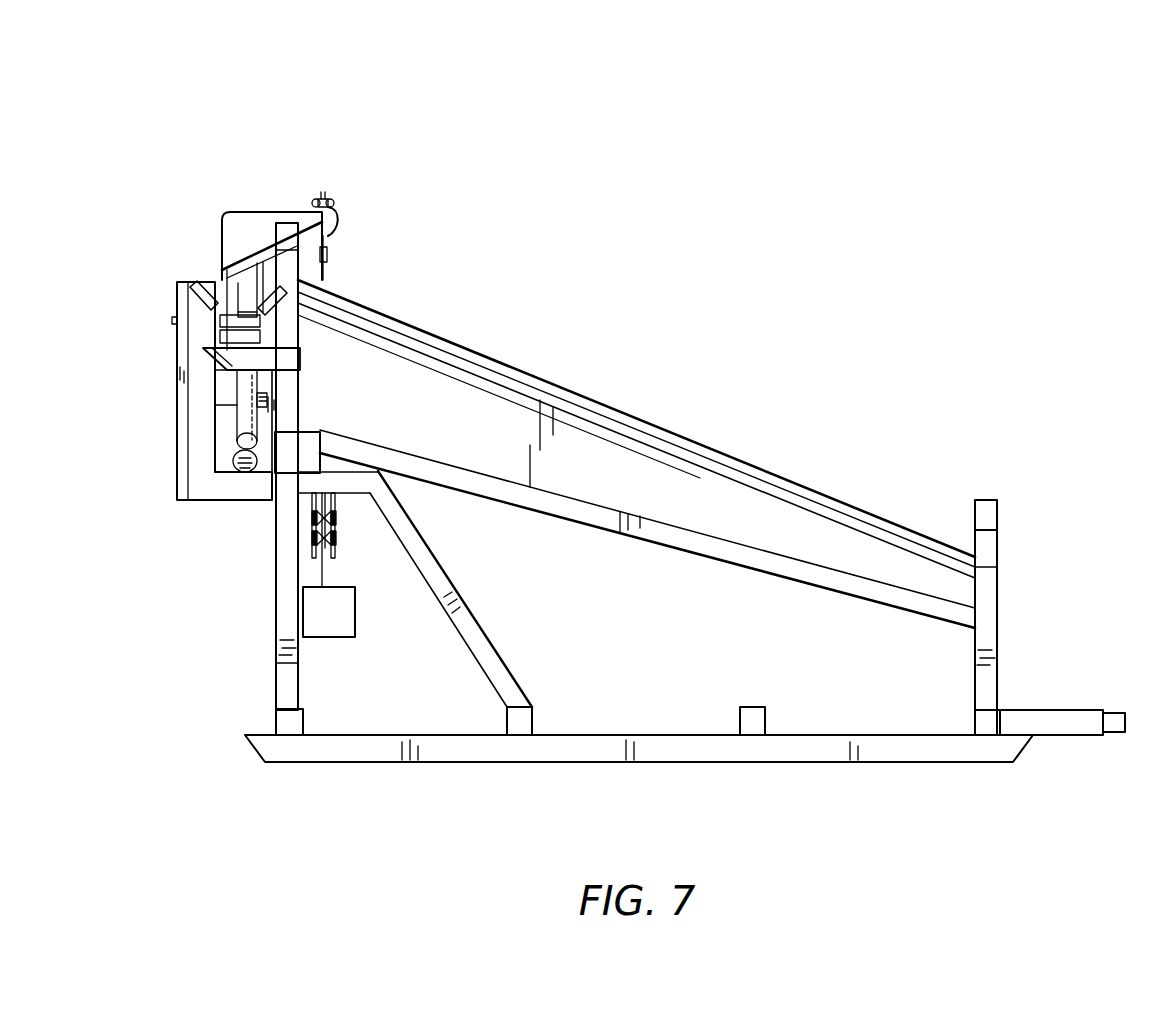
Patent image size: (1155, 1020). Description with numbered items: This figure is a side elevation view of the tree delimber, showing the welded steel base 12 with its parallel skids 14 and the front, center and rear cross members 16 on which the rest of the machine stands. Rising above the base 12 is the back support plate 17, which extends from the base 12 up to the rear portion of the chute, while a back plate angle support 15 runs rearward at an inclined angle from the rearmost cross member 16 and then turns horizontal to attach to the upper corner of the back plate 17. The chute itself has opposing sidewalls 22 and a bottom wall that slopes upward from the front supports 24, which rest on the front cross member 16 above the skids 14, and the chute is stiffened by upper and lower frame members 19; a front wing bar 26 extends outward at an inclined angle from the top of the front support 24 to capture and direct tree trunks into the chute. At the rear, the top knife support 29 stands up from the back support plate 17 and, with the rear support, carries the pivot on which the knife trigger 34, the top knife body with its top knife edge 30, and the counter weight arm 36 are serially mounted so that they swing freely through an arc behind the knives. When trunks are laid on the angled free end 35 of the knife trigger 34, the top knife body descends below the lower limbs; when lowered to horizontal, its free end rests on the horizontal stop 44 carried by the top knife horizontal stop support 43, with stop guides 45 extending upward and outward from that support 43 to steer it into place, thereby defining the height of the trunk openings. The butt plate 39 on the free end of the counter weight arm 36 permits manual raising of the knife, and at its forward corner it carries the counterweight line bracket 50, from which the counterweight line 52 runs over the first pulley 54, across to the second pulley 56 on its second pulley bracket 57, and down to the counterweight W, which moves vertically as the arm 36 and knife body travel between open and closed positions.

The base 12 is at (603, 490).
The skids 14 is at (437, 753).
The back plate angle support 15 is at (483, 642).
The cross members 16 is at (295, 723).
The back support plate 17 is at (282, 632).
The frame members 19 is at (693, 433).
The sidewalls 22 is at (462, 447).
The front supports 24 is at (988, 637).
The front wing bars 26 is at (985, 508).
The top knife support 29 is at (197, 453).
The top knife edge 30 is at (217, 315).
The knife trigger 34 is at (243, 412).
The angled free end 35 is at (240, 447).
The counter weight arm 36 is at (257, 283).
The butt plate 39 is at (257, 213).
The top knife horizontal stop support 43 is at (233, 358).
The horizontal stop 44 is at (228, 343).
The stop guides 45 is at (197, 287).
The counterweight line bracket 50 is at (324, 197).
The counterweight line 52 is at (325, 272).
The first pulley 54 is at (333, 530).
The second pulley 56 is at (335, 548).
The second pulley bracket 57 is at (312, 533).
The counterweight W is at (345, 633).